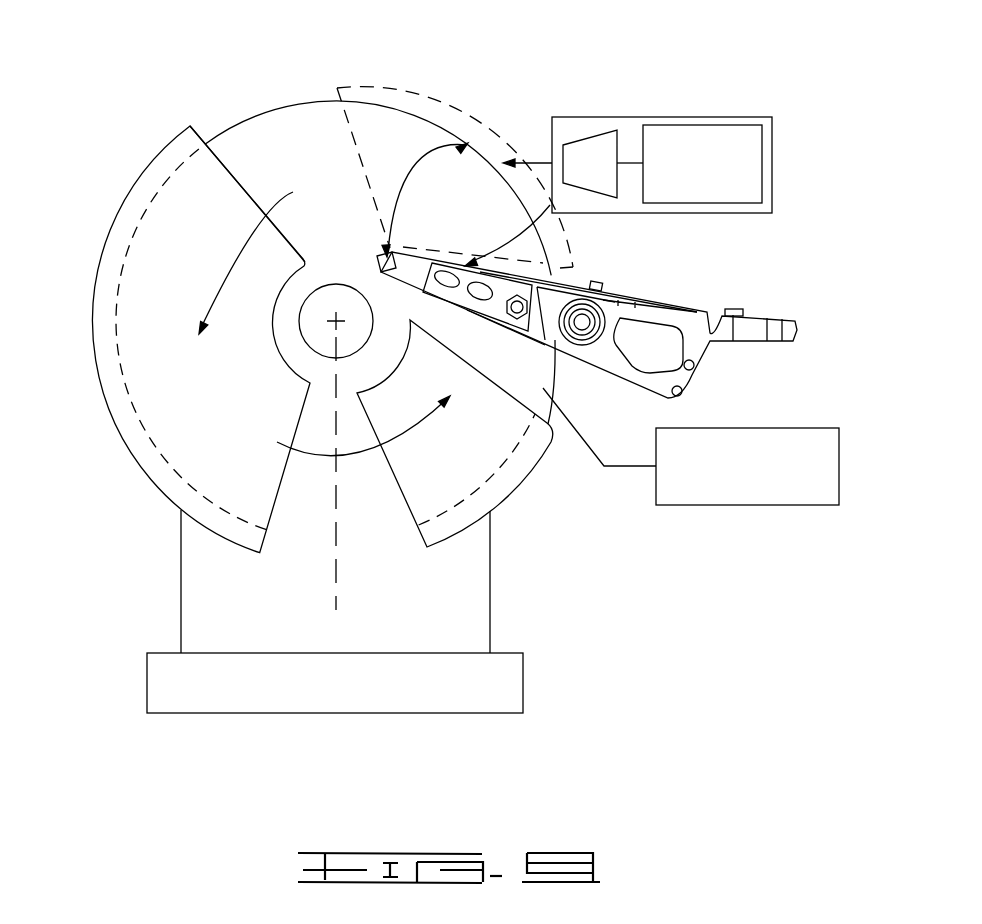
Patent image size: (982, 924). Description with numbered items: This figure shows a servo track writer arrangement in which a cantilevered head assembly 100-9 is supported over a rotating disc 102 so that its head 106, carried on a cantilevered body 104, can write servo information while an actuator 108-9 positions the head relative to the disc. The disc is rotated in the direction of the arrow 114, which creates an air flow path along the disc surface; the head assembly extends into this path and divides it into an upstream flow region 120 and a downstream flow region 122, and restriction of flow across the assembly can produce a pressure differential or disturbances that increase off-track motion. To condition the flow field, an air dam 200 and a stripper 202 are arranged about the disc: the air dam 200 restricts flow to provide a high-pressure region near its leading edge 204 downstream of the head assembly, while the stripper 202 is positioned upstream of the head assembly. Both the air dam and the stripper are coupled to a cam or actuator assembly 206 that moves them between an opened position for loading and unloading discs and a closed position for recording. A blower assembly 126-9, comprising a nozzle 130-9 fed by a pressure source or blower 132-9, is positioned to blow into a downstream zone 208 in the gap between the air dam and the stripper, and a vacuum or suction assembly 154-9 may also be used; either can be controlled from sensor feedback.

The cantilevered head assembly 100-9 is at (549, 308).
The rotating disc 102 is at (295, 103).
The cantilevered body 104 is at (409, 262).
The head 106 is at (377, 258).
The actuator 108-9 is at (620, 317).
The arrow indicating disc rotation 114 is at (213, 257).
The upstream flow region 120 is at (512, 363).
The downstream flow region 122 is at (478, 198).
The blower assembly 126-9 is at (677, 116).
The nozzle 130-9 is at (580, 143).
The pressure source or blower 132-9 is at (753, 130).
The vacuum or suction assembly 154-9 is at (765, 428).
The air dam 200 is at (158, 150).
The stripper 202 is at (517, 493).
The leading edge 204 is at (235, 178).
The cam or actuator assembly 206 is at (147, 682).
The downstream zone 208 is at (415, 88).